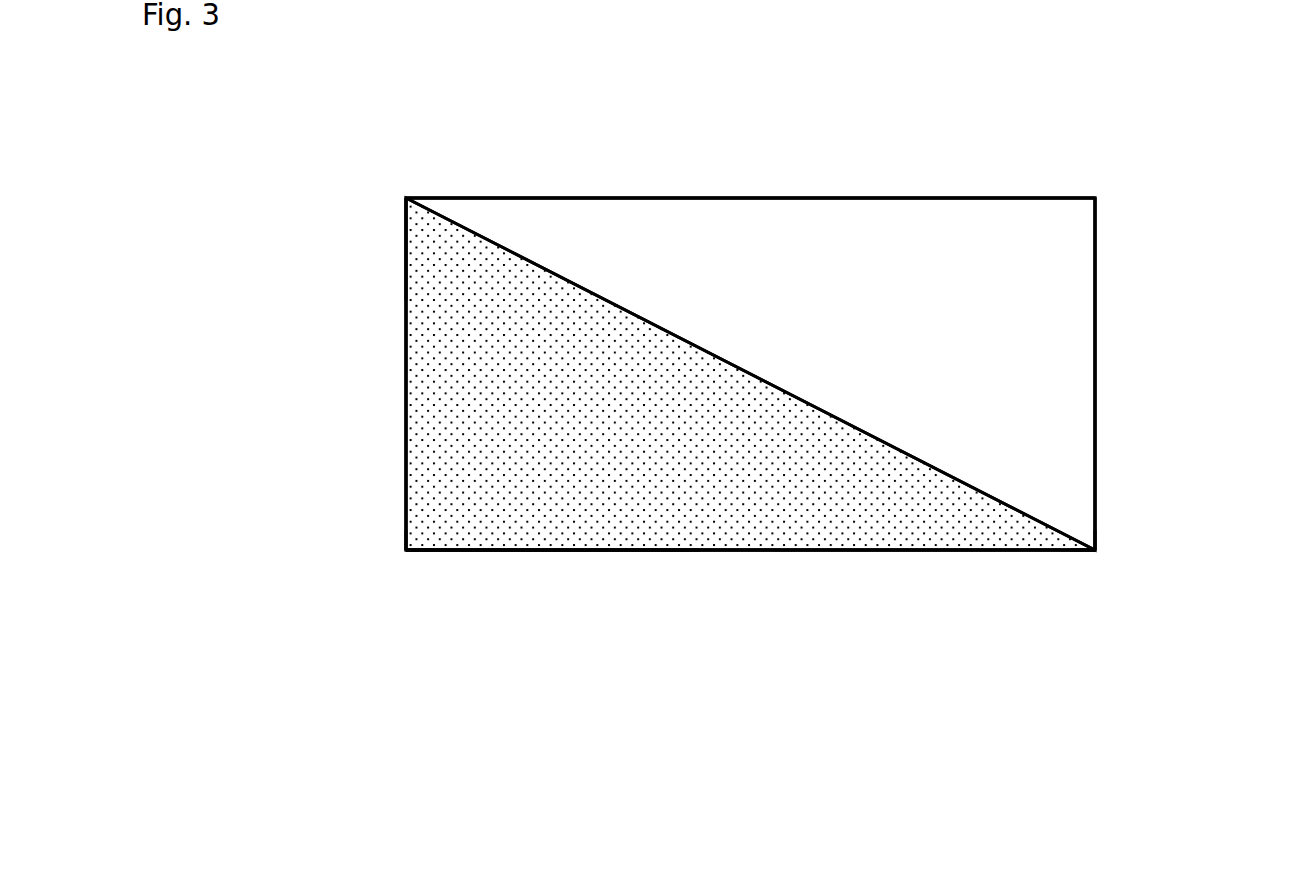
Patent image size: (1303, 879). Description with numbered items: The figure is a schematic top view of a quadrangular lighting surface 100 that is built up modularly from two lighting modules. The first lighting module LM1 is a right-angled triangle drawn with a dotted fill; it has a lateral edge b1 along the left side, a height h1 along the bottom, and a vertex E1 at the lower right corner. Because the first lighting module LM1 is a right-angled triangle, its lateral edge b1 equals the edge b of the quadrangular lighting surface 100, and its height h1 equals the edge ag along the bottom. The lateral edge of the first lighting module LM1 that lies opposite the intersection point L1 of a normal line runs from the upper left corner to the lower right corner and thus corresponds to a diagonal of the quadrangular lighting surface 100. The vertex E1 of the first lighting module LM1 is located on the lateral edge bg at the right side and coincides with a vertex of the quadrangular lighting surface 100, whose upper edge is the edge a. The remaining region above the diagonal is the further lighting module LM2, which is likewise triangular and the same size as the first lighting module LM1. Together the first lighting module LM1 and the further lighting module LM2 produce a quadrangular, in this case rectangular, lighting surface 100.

The quadrangular lighting surface 100 is at (1193, 148).
The first lighting module LM1 is at (470, 449).
The further lighting module LM2 is at (1040, 449).
The edge of the quadrangular lighting surface a is at (672, 198).
The lateral edge of the first lighting module b1 is at (402, 267).
The edge of the quadrangular lighting surface b is at (403, 342).
The lateral edge bg is at (1095, 357).
The edge of the quadrangular lighting surface ag is at (693, 552).
The height of the first lighting module h1 is at (553, 548).
The intersection point of a normal line L1 is at (396, 554).
The vertex of the first lighting module E1 is at (1107, 568).